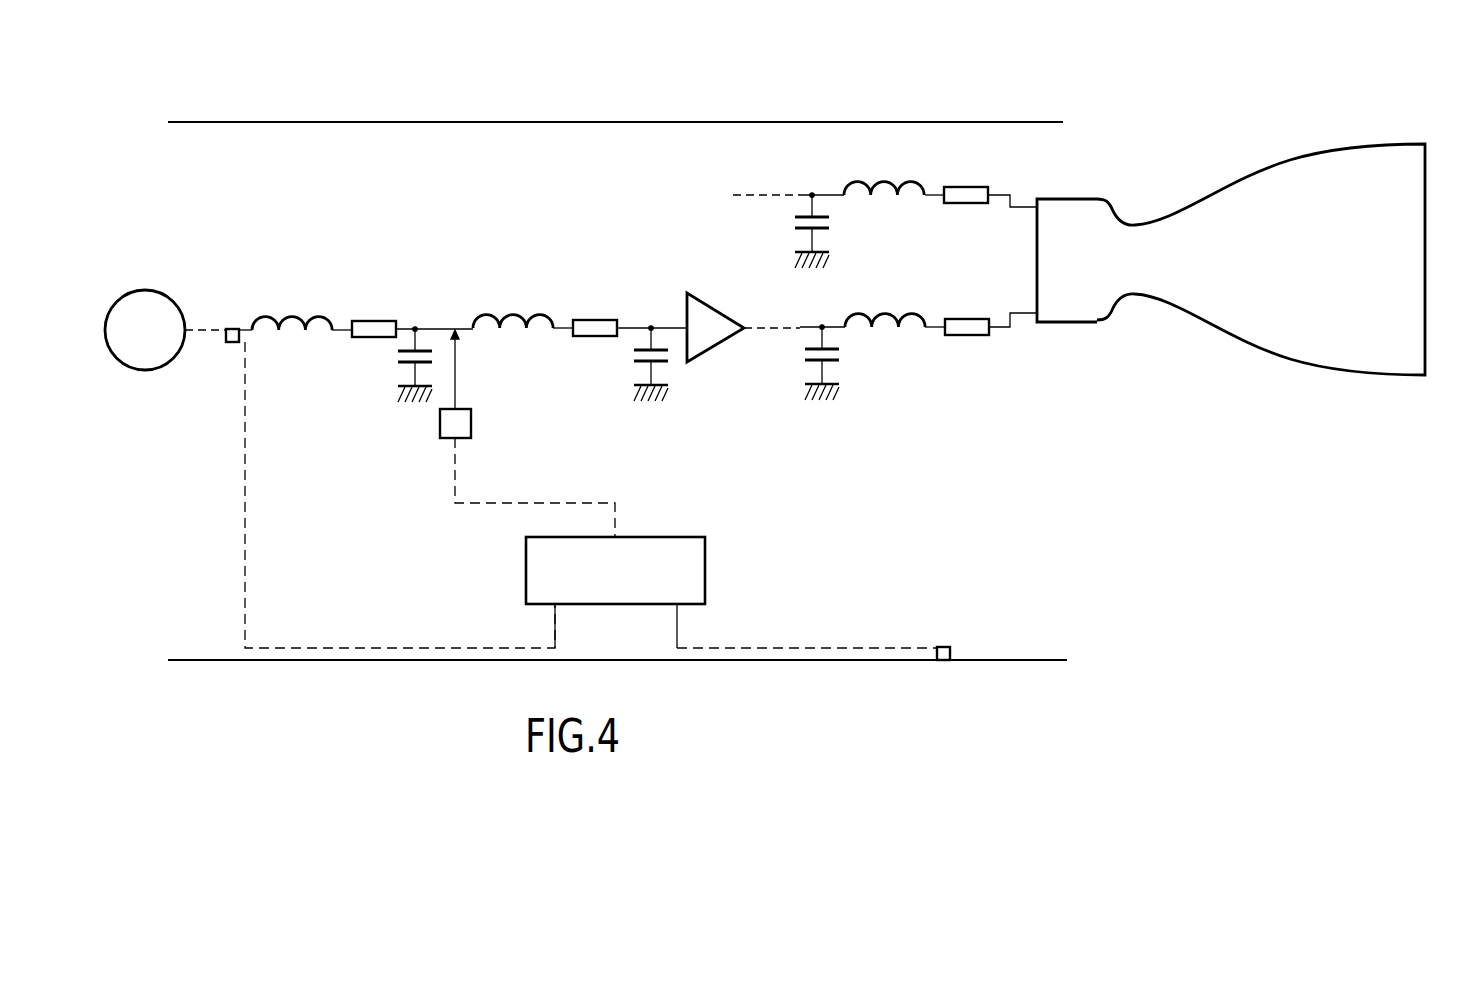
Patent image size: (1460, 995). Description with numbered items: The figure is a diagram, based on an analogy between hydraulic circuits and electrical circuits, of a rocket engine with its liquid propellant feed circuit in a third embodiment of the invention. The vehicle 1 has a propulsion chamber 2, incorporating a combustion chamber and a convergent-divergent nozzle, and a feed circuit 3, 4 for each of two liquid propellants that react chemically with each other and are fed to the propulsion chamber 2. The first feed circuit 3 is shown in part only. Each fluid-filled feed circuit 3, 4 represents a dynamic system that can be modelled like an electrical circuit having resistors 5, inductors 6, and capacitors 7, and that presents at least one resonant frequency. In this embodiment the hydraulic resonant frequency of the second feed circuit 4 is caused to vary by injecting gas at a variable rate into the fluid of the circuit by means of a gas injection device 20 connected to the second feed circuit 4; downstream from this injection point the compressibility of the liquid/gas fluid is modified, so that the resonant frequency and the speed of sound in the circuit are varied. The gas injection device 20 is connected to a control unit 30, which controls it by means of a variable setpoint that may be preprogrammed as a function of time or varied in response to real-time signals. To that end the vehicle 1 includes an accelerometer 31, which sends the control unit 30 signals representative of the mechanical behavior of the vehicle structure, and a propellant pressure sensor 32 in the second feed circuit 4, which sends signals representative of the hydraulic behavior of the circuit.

The vehicle 1 is at (1100, 93).
The propulsion chamber 2 is at (1280, 268).
The first feed circuit 3 is at (797, 195).
The second feed circuit 4 is at (898, 339).
The resistor 5 is at (968, 333).
The inductor 6 is at (876, 330).
The capacitor 7 is at (805, 361).
The gas injection device 20 is at (471, 425).
The control unit 30 is at (630, 582).
The accelerometer 31 is at (950, 648).
The propellant pressure sensor 32 is at (232, 328).